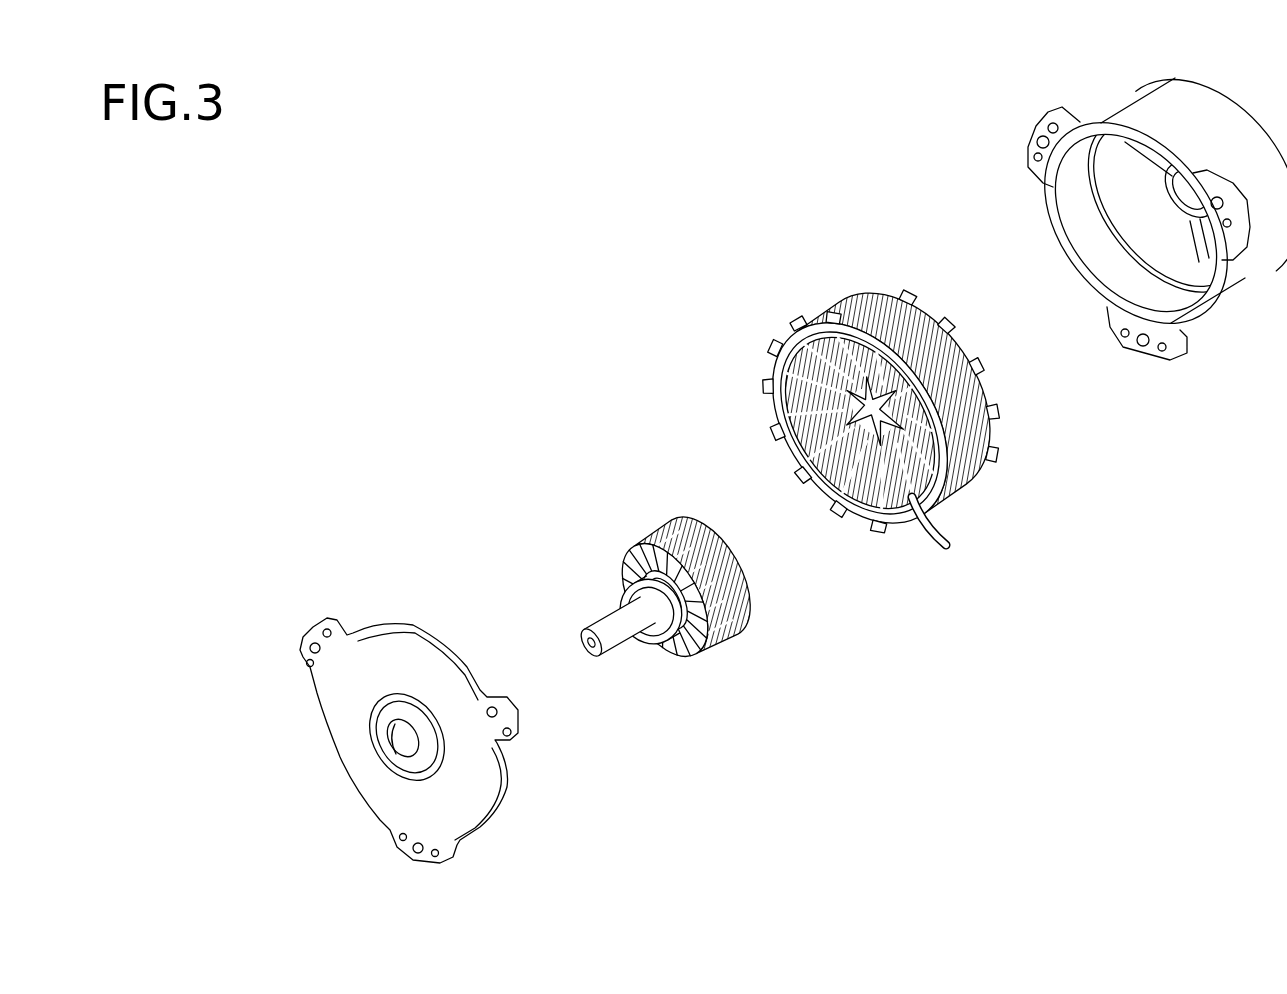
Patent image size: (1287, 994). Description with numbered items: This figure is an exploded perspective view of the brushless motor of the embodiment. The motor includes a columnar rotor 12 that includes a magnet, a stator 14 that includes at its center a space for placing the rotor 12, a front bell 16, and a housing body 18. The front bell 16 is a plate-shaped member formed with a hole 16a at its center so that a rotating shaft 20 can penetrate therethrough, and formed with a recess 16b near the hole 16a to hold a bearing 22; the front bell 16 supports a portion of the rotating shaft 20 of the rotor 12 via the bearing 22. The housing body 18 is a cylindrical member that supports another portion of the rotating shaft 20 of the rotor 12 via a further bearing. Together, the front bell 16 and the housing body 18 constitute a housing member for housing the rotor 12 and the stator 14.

The rotor 12 is at (673, 628).
The stator 14 is at (960, 555).
The front bell 16 is at (426, 741).
The hole 16a is at (389, 746).
The recess 16b is at (413, 753).
The housing body 18 is at (1215, 349).
The rotating shaft 20 is at (629, 636).
The bearing 22 is at (655, 641).